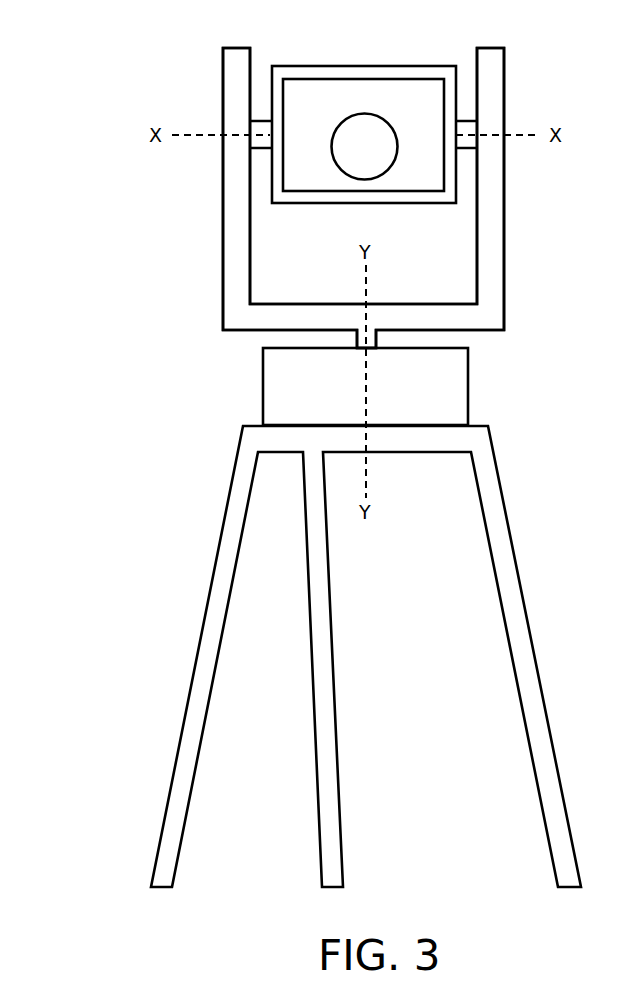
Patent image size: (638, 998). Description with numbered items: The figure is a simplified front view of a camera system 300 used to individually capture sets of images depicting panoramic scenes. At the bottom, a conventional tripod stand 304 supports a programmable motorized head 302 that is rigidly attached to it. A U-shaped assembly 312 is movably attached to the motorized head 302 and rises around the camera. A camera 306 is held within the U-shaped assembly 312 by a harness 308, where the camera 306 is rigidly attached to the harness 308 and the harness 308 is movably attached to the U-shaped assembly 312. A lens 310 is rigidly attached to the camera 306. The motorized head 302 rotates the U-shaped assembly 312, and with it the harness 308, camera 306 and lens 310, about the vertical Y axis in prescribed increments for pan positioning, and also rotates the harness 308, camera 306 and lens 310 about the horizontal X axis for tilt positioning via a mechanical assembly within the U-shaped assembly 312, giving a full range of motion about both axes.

The camera system 300 is at (108, 67).
The programmable motorized head 302 is at (457, 383).
The tripod stand 304 is at (528, 588).
The camera 306 is at (437, 108).
The harness 308 is at (381, 66).
The lens 310 is at (383, 157).
The U-shaped assembly 312 is at (510, 289).